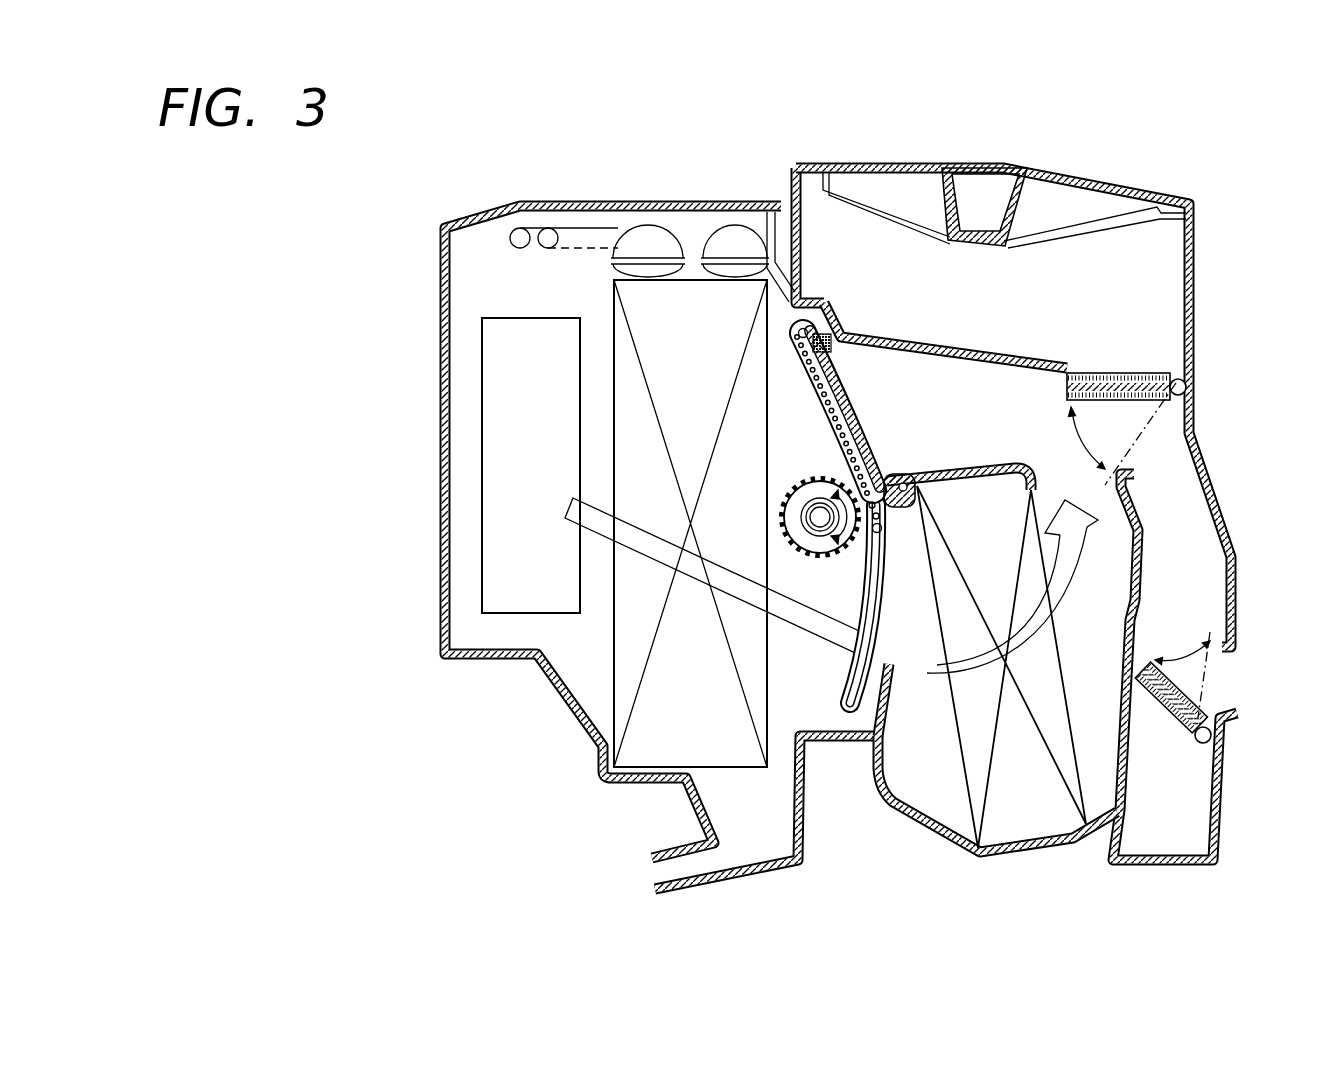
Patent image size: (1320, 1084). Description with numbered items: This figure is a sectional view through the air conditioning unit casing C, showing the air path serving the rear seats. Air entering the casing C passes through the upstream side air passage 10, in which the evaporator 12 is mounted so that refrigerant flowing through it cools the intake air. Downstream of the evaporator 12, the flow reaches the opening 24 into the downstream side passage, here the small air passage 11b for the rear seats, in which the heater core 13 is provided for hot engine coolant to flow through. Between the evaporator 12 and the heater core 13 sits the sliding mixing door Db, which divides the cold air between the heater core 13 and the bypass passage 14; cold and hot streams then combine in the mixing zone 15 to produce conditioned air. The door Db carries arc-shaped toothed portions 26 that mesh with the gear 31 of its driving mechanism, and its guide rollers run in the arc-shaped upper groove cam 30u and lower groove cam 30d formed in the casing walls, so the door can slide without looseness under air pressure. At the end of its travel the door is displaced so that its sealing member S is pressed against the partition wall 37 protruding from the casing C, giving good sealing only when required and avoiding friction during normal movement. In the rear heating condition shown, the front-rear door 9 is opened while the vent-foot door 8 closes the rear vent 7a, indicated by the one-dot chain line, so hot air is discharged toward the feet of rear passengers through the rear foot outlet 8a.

The casing C is at (468, 200).
The partition wall 37 is at (823, 306).
The sealing member S is at (837, 333).
The toothed portions 26 is at (845, 381).
The door for rear seat small air passage Db is at (842, 376).
The upper groove cam 30u is at (827, 406).
The bypass passage 14 is at (945, 366).
The mixing zone 15 is at (1097, 434).
The gear 31 is at (808, 491).
The front-rear door 9 is at (1137, 369).
The lower groove cam 30d is at (884, 590).
The opening 24 is at (890, 662).
The upstream side air passage 10 is at (585, 680).
The evaporator 12 is at (646, 745).
The small air passage for rear seats 11b is at (912, 752).
The heater core 13 is at (1032, 810).
The vent-foot door 8 is at (1165, 718).
The rear foot outlet 8a is at (1140, 863).
The rear vent 7a is at (1228, 678).